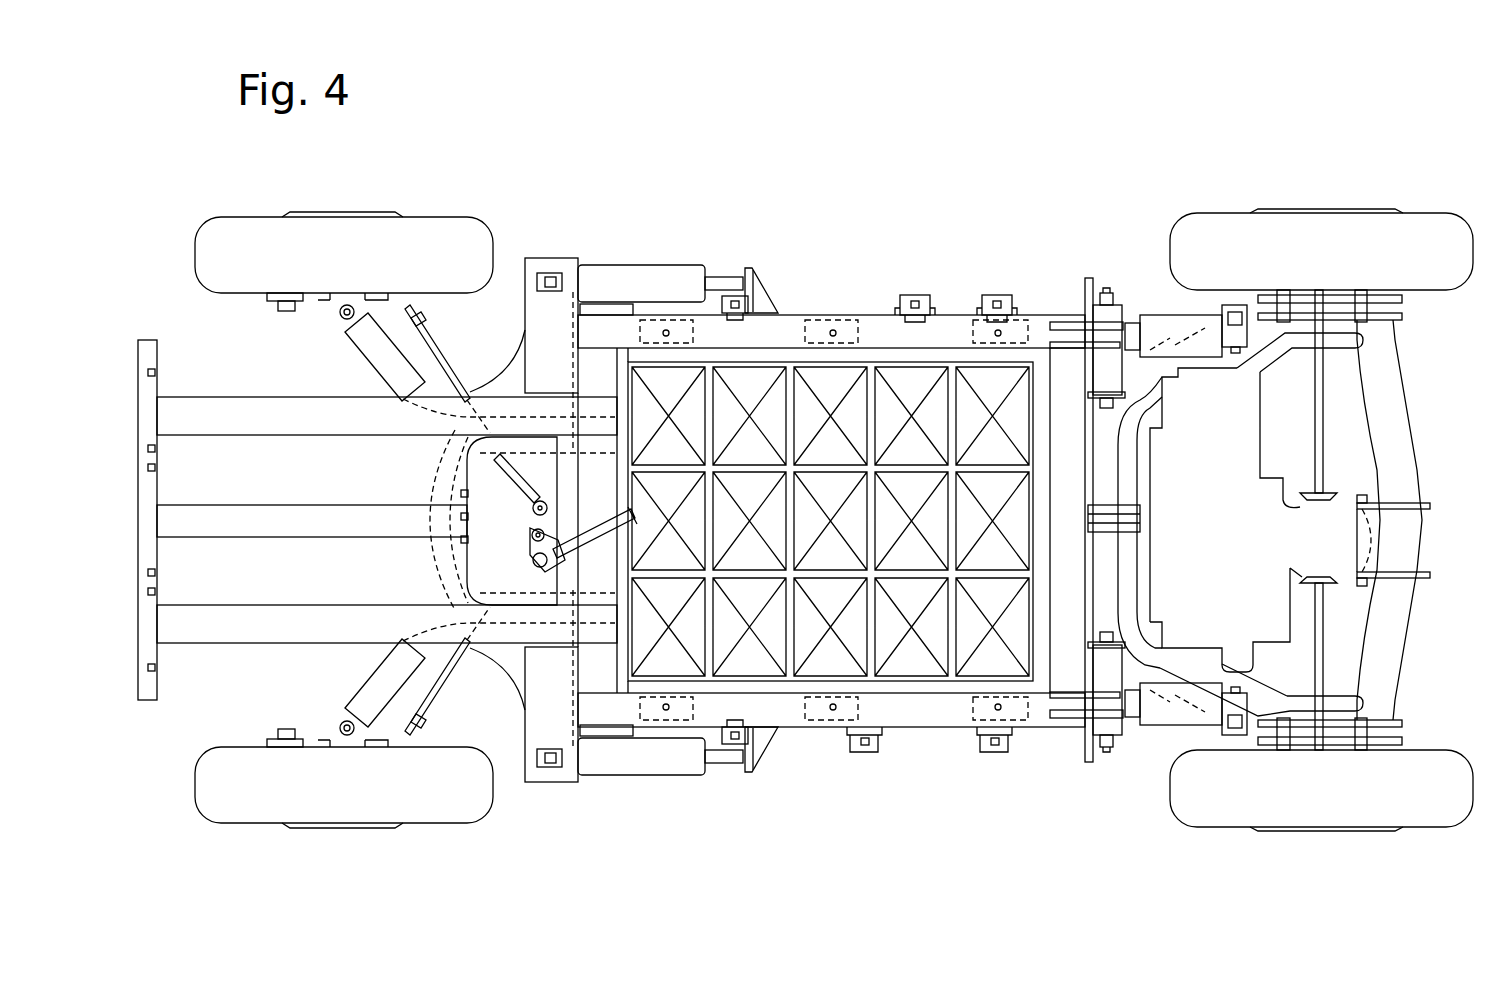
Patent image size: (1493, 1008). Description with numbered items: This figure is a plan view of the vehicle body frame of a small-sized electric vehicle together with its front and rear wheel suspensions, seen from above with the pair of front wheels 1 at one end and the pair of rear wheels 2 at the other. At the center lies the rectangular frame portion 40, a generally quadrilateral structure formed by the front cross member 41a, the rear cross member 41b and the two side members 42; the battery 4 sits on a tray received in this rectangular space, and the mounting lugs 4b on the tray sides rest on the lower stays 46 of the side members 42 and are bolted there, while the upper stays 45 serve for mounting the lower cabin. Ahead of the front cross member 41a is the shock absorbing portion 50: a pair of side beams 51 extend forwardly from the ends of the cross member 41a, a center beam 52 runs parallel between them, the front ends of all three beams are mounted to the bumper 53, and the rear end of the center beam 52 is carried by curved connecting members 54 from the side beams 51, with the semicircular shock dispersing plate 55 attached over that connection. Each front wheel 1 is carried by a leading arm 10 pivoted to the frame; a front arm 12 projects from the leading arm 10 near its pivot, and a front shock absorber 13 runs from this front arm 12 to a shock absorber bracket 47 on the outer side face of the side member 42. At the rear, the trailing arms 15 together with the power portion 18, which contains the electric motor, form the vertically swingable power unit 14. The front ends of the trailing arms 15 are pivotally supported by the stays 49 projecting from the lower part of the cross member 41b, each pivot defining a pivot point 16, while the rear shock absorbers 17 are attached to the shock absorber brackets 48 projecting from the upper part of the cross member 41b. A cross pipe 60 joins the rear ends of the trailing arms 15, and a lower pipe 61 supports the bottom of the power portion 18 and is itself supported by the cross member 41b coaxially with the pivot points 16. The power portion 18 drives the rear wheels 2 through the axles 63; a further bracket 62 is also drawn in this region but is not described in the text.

The front wheel 1 is at (243, 218).
The rear wheel 2 is at (1232, 215).
The battery 4 is at (845, 382).
The mounting lug 4b is at (953, 700).
The leading arm 10 is at (363, 357).
The front arm 12 is at (535, 278).
The front shock absorber 13 is at (628, 268).
The power unit 14 is at (1440, 406).
The trailing arm 15 is at (1130, 360).
The pivot point 16 is at (1100, 295).
The rear shock absorber 17 is at (1170, 312).
The power portion 18 is at (1258, 550).
The rectangular frame portion 40 is at (850, 282).
The front cross member 41a is at (585, 355).
The rear cross member 41b is at (1057, 367).
The side member 42 is at (790, 318).
The stay 45 is at (865, 752).
The stay 46 is at (967, 733).
The shock absorber bracket 47 is at (762, 280).
The shock absorber bracket 48 is at (1060, 322).
The stay 49 is at (1173, 320).
The shock absorbing portion 50 is at (186, 700).
The side beam 51 is at (287, 434).
The center beam 52 is at (232, 537).
The bumper 53 is at (160, 487).
The connecting member 54 is at (423, 493).
The shock dispersing plate 55 is at (538, 521).
The cross pipe 60 is at (1405, 640).
The lower pipe 61 is at (1280, 356).
The bracket 62 is at (1140, 503).
The axle 63 is at (1320, 463).